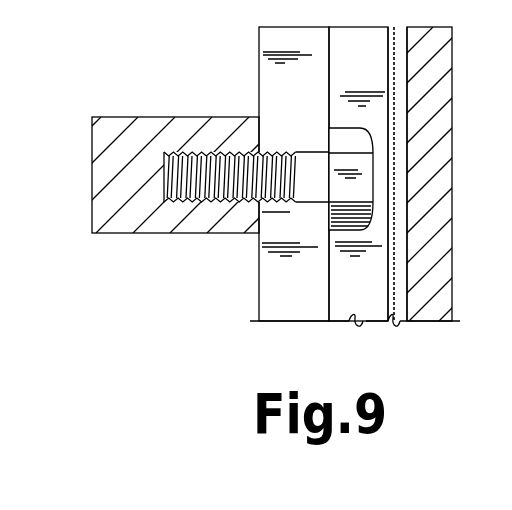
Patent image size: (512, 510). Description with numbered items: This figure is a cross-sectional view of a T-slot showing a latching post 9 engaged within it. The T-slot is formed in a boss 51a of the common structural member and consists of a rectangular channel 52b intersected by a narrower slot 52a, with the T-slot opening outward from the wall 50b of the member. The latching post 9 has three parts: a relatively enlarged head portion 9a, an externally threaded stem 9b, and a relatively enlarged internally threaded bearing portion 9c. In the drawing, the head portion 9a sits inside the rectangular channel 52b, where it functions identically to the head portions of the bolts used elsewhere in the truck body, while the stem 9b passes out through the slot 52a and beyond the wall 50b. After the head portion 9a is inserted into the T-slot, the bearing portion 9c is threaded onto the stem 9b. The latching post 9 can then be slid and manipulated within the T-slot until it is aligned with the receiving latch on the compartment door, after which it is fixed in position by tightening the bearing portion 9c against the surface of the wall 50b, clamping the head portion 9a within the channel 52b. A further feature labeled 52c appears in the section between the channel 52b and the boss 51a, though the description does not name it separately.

The latching post 9 is at (247, 233).
The head portion 9a is at (373, 178).
The externally threaded stem 9b is at (247, 152).
The internally threaded bearing portion 9c is at (185, 133).
The wall 50b is at (259, 308).
The boss 51a is at (444, 99).
The slot 52a is at (311, 305).
The rectangular channel 52b is at (378, 305).
The thin intermediate layer / gap 52c is at (402, 300).